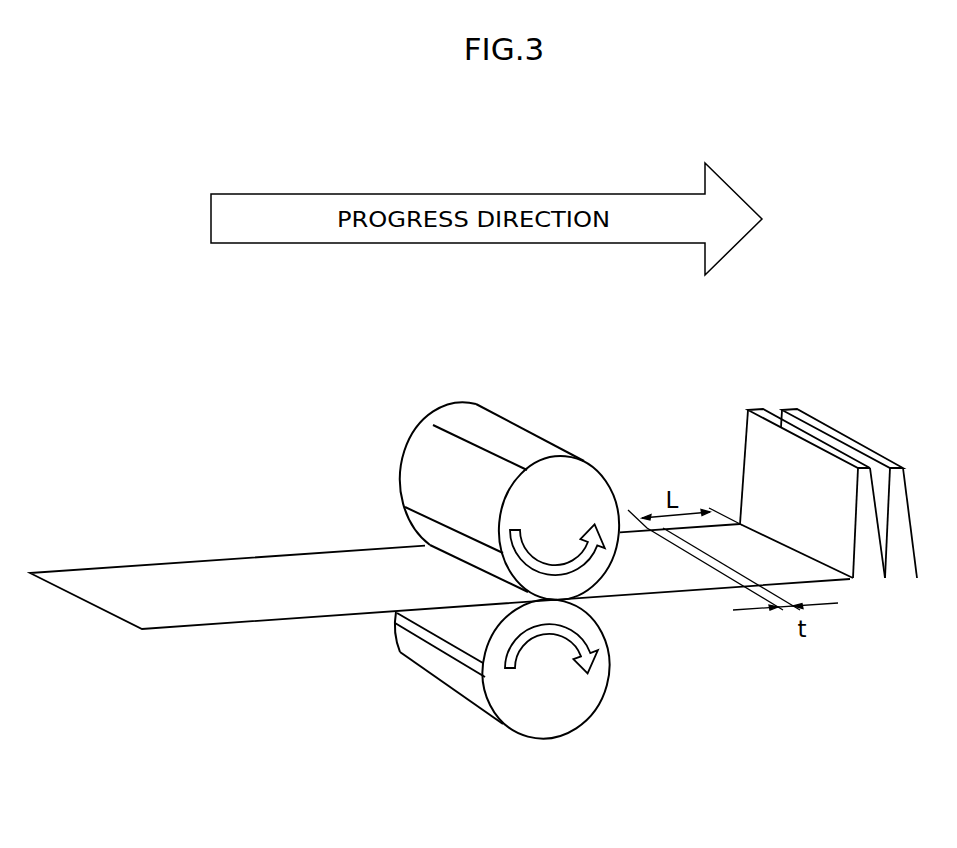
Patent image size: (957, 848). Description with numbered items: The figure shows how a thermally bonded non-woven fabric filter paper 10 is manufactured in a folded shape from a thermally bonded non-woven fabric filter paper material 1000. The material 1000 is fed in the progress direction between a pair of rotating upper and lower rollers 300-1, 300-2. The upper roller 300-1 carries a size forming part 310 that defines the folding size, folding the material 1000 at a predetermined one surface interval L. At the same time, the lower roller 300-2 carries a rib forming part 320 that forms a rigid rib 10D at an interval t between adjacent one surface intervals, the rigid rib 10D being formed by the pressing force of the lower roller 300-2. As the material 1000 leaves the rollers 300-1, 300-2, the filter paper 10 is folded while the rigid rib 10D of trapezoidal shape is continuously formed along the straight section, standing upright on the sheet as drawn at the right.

The thermally bonded non-woven fabric filter paper material 1000 is at (174, 585).
The upper roller 300-1 is at (572, 485).
The lower roller 300-2 is at (560, 687).
The size forming part 310 is at (425, 473).
The rib forming part 320 is at (433, 643).
The rigid rib 10D is at (858, 449).
The thermally bonded non-woven fabric filter paper 10 is at (857, 586).